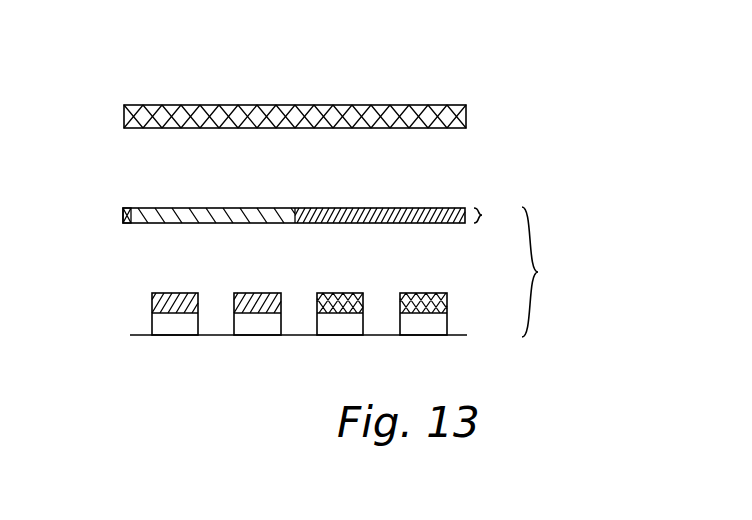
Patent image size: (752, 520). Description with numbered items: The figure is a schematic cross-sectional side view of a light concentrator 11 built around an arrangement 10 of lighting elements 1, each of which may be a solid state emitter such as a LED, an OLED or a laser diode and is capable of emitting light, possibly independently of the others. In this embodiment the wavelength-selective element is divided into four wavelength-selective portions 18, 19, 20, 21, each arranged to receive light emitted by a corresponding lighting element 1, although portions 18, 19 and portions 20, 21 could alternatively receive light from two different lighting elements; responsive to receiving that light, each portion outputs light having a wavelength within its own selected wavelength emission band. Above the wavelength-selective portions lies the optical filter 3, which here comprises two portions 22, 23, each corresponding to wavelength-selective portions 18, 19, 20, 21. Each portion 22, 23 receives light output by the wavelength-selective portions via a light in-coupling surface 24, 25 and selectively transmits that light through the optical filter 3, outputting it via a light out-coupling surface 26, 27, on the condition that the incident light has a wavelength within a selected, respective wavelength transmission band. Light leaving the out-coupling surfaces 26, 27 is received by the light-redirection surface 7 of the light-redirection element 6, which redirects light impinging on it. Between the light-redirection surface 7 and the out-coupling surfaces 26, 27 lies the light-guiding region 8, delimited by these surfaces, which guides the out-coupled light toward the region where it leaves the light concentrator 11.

The lighting element 1 is at (198, 323).
The optical filter 3 is at (489, 219).
The light-redirection element 6 is at (190, 115).
The light-redirection surface 7 is at (270, 128).
The light-guiding region 8 is at (368, 153).
The arrangement 10 is at (550, 272).
The light concentrator 11 is at (531, 86).
The wavelength-selective portion 18 is at (178, 292).
The wavelength-selective portion 19 is at (258, 292).
The wavelength-selective portion 20 is at (340, 292).
The wavelength-selective portion 21 is at (422, 292).
The portion of the optical filter 22 is at (124, 212).
The portion of the optical filter 23 is at (458, 212).
The light in-coupling surface 24 is at (138, 225).
The light in-coupling surface 25 is at (456, 224).
The light out-coupling surface 26 is at (137, 208).
The light out-coupling surface 27 is at (425, 207).